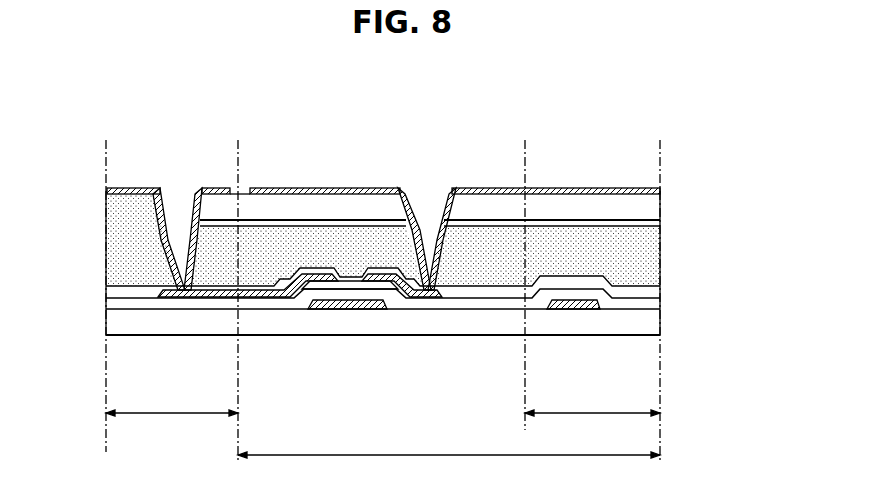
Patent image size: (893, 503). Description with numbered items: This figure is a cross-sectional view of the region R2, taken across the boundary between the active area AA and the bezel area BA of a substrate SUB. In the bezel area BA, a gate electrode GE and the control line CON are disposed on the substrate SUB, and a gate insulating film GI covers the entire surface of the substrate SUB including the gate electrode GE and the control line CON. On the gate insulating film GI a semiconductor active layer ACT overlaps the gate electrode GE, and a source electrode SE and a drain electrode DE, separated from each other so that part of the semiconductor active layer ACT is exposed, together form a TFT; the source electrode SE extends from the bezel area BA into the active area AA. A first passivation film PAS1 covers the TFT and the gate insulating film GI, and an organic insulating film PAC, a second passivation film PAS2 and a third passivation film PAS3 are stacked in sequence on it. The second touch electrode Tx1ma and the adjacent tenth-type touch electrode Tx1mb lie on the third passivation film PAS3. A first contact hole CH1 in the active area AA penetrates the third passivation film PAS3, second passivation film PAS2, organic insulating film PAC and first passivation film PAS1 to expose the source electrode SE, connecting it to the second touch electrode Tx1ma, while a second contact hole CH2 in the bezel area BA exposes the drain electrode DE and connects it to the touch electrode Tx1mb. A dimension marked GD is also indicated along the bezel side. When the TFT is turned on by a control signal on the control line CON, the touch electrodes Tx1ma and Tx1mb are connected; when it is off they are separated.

The region R2 is at (82, 99).
The substrate SUB is at (660, 326).
The gate insulating film GI is at (660, 305).
The gate electrode GE is at (378, 306).
The control line CON is at (573, 309).
The semiconductor active layer ACT is at (342, 280).
The source electrode SE is at (283, 298).
The drain electrode DE is at (428, 299).
The first passivation film PAS1 is at (660, 287).
The organic insulating film PAC is at (660, 250).
The second passivation film PAS2 is at (660, 222).
The third passivation film PAS3 is at (660, 200).
The second touch electrode Tx1ma is at (137, 187).
The (10-1)-th touch electrode Tx1mb is at (488, 187).
The first contact hole CH1 is at (192, 195).
The second contact hole CH2 is at (414, 195).
The active area AA is at (172, 404).
The bezel area BA is at (449, 446).
The gate driver area GD is at (592, 404).